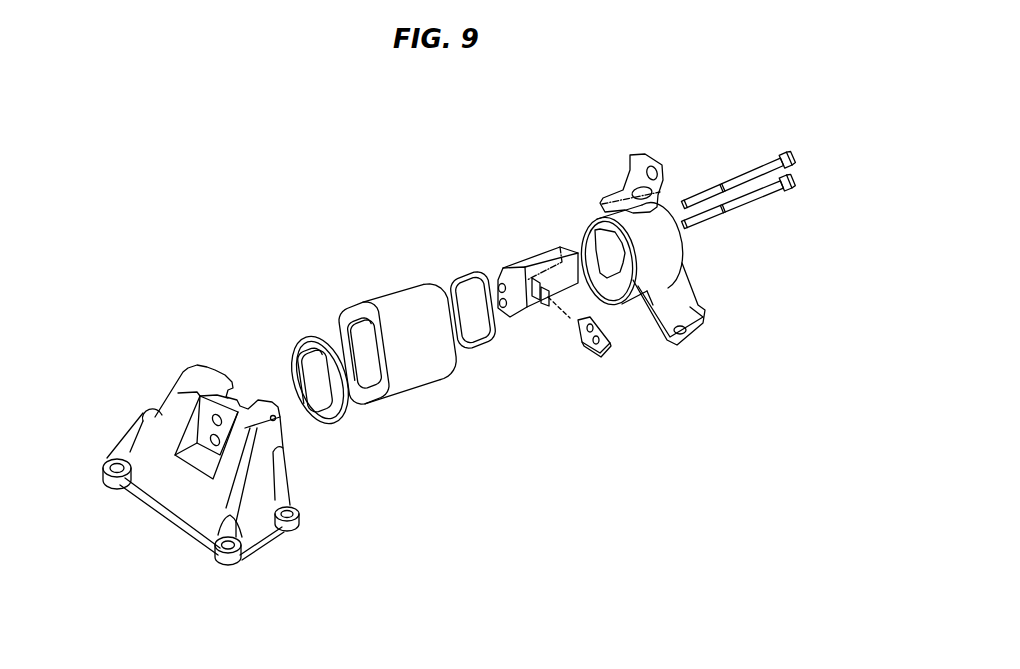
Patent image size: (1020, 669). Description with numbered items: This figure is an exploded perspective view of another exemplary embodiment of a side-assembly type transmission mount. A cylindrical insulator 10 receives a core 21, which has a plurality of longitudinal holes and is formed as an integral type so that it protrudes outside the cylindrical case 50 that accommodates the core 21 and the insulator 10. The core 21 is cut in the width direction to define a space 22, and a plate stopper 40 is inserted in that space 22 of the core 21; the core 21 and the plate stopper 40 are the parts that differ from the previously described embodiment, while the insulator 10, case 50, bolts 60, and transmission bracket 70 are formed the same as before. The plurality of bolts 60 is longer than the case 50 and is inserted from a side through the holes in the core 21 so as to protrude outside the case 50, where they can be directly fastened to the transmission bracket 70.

The insulator 10 is at (615, 217).
The core 21 is at (533, 262).
The space 22 is at (530, 312).
The plate stopper 40 is at (607, 350).
The case 50 is at (397, 315).
The bolts 60 is at (757, 175).
The transmission bracket 70 is at (182, 396).